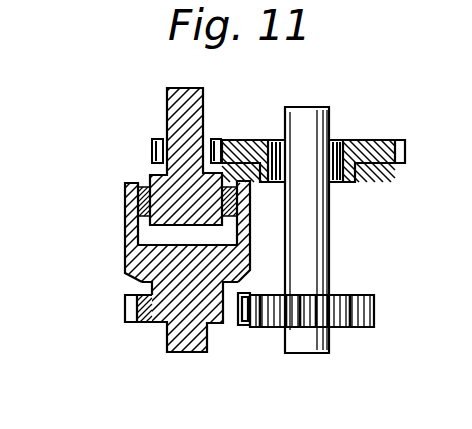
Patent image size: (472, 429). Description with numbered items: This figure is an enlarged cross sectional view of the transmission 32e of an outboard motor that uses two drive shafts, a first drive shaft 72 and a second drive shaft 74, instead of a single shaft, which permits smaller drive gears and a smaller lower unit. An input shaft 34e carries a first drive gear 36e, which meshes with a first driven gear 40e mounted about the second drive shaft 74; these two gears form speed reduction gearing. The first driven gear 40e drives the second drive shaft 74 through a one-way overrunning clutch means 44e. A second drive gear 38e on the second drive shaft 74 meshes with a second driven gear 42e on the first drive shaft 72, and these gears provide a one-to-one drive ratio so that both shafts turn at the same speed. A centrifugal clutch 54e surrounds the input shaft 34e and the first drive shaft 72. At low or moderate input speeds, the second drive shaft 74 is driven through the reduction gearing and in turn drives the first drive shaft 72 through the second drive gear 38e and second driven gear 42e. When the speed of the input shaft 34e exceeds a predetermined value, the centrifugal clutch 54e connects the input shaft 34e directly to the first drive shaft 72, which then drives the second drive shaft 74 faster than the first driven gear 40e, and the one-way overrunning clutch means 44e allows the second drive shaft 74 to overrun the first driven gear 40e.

The transmission 32e is at (370, 90).
The input shaft 34e is at (178, 96).
The first drive gear 36e is at (151, 144).
The second drive gear 38e is at (369, 279).
The first driven gear 40e is at (380, 150).
The second driven gear 42e is at (124, 308).
The one-way overrunning clutch means 44e is at (338, 188).
The centrifugal clutch 54e is at (112, 196).
The first drive shaft 72 is at (177, 341).
The second drive shaft 74 is at (298, 243).